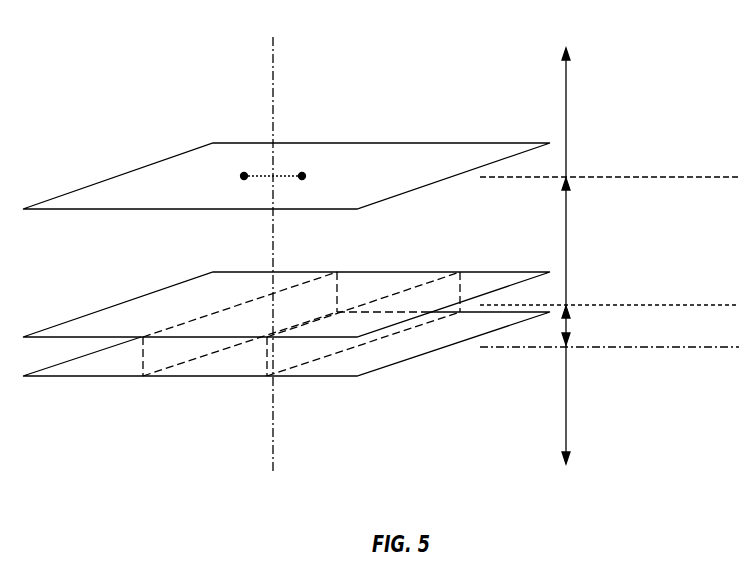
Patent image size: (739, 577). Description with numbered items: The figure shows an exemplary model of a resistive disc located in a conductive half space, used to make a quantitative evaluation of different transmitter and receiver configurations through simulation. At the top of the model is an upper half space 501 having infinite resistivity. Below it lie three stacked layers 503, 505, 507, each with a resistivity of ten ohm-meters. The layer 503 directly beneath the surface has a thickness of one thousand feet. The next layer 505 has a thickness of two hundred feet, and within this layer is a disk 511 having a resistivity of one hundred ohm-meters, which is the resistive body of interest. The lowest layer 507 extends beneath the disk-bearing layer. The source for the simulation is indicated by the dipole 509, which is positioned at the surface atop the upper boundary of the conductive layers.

The upper half space 501 is at (615, 122).
The layer 503 is at (615, 250).
The layer 505 is at (615, 336).
The layer 507 is at (615, 412).
The dipole 509 is at (255, 174).
The disk 511 is at (256, 300).